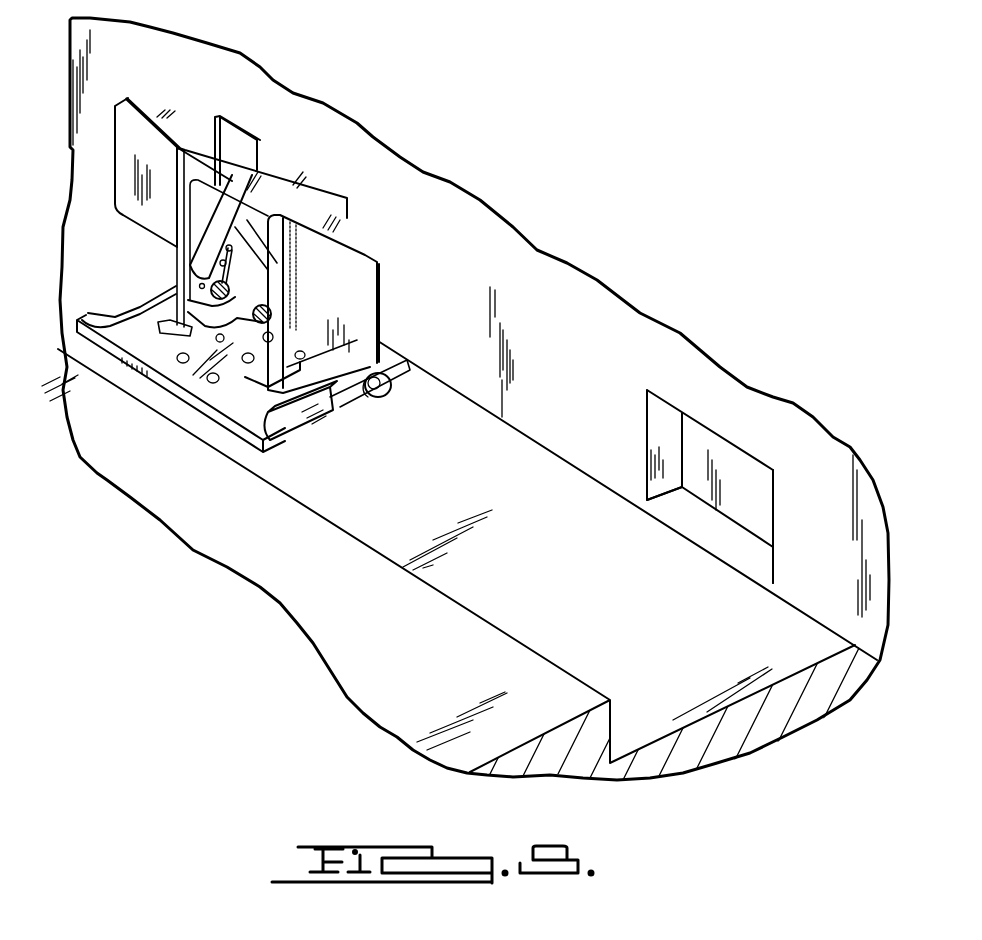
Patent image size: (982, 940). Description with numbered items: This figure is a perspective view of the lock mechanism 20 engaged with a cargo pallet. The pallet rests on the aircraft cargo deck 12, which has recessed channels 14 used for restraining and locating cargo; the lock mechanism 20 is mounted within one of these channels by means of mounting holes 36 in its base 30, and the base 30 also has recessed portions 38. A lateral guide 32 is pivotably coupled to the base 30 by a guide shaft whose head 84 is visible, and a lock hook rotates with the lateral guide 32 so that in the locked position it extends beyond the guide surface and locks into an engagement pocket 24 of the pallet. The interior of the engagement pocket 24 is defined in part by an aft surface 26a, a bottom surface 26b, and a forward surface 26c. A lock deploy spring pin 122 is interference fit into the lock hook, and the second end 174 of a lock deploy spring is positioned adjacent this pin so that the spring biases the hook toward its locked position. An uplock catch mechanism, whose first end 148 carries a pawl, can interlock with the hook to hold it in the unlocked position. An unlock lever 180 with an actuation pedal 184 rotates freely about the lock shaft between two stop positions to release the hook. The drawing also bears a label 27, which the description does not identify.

The cargo deck 12 is at (408, 668).
The recessed channels 14 is at (700, 694).
The lock mechanism 20 is at (398, 288).
The engagement pockets 24 is at (328, 204).
The aft surface 26a is at (240, 137).
The bottom surface 26b is at (720, 522).
The forward surface 26c is at (773, 553).
The slot 27 is at (560, 382).
The base 30 is at (291, 425).
The lateral guide 32 is at (345, 226).
The mounting holes 36 is at (178, 361).
The recessed portions 38 is at (228, 380).
The head 84 is at (383, 394).
The lock deploy spring pin 122 is at (218, 270).
The first end 148 is at (331, 375).
The second end 174 is at (240, 268).
The unlock lever 180 is at (217, 342).
The actuation pedal 184 is at (190, 325).